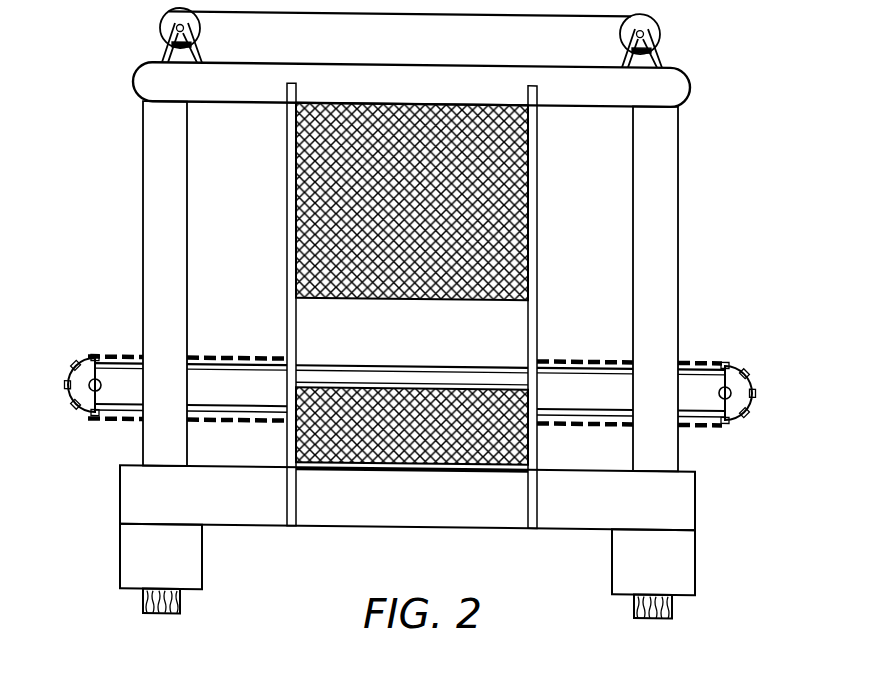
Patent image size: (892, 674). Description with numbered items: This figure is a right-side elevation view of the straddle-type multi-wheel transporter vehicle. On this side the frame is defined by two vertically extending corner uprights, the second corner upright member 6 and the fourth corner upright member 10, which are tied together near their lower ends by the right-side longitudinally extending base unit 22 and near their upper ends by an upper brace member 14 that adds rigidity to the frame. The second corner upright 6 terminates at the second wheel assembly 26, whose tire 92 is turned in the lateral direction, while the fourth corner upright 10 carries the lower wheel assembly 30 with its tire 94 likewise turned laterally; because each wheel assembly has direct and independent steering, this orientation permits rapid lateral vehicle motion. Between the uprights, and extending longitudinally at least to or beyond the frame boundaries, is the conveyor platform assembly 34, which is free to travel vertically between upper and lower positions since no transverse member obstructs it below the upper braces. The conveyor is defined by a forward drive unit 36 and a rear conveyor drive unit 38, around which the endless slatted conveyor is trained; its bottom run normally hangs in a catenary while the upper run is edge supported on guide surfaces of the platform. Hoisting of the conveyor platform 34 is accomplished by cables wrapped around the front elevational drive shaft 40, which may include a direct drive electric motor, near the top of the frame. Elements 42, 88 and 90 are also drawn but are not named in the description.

The second corner upright member 6 is at (660, 225).
The fourth corner upright member 10 is at (160, 178).
The upper brace member 14 is at (400, 91).
The right-side longitudinally extending base unit 22 is at (403, 499).
The second wheel assembly 26 is at (629, 566).
The lower wheel assembly 30 is at (144, 564).
The conveyor platform assembly 34 is at (88, 417).
The forward drive unit 36 is at (93, 382).
The rear conveyor drive unit 38 is at (733, 385).
The front elevational drive shaft 40 is at (650, 8).
The left pulley 42 is at (172, 8).
The upper chain rail 88 is at (592, 358).
The lower chain rail 90 is at (230, 426).
The tire 92 is at (634, 600).
The tire 94 is at (142, 611).